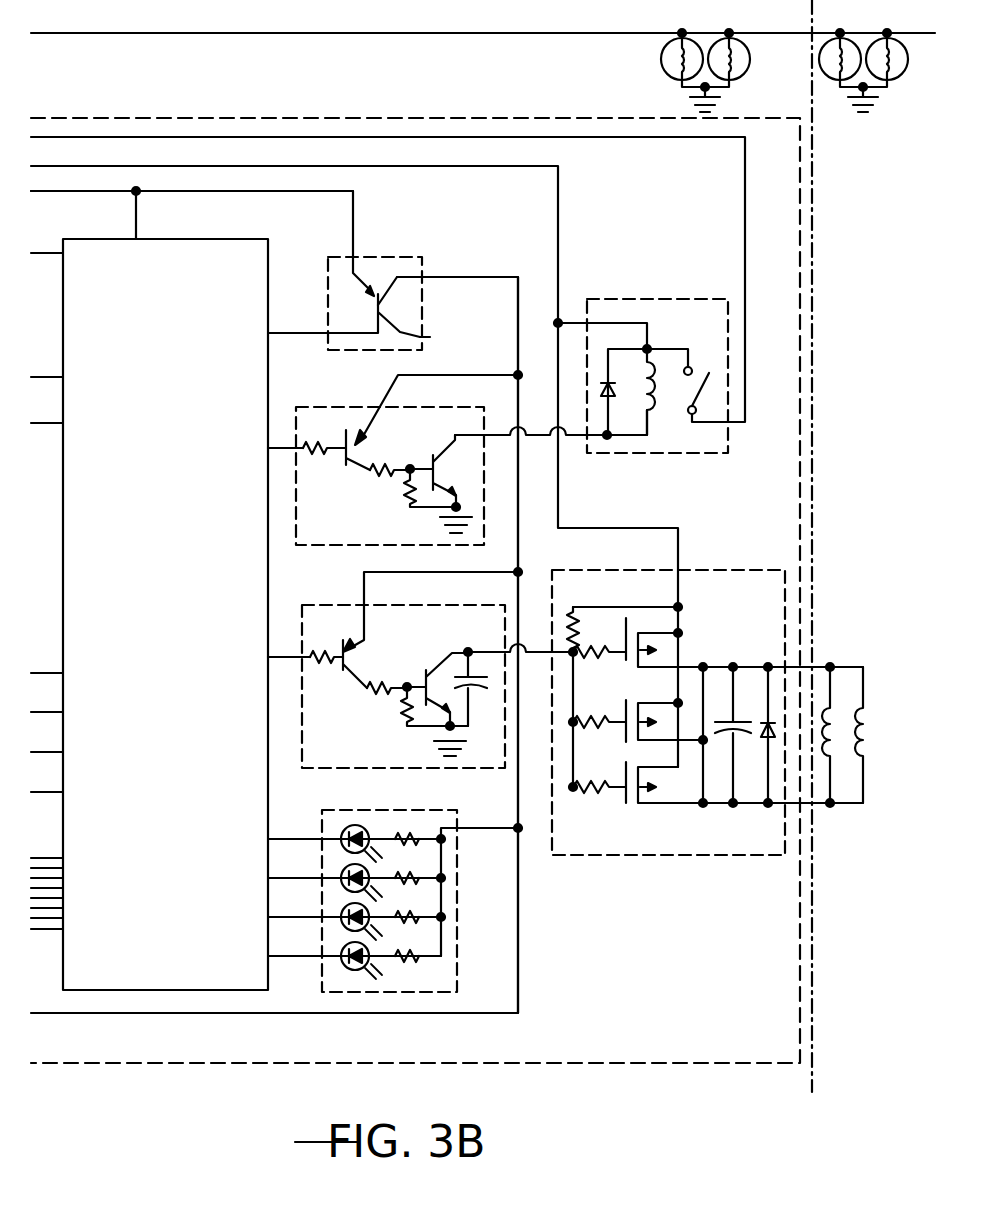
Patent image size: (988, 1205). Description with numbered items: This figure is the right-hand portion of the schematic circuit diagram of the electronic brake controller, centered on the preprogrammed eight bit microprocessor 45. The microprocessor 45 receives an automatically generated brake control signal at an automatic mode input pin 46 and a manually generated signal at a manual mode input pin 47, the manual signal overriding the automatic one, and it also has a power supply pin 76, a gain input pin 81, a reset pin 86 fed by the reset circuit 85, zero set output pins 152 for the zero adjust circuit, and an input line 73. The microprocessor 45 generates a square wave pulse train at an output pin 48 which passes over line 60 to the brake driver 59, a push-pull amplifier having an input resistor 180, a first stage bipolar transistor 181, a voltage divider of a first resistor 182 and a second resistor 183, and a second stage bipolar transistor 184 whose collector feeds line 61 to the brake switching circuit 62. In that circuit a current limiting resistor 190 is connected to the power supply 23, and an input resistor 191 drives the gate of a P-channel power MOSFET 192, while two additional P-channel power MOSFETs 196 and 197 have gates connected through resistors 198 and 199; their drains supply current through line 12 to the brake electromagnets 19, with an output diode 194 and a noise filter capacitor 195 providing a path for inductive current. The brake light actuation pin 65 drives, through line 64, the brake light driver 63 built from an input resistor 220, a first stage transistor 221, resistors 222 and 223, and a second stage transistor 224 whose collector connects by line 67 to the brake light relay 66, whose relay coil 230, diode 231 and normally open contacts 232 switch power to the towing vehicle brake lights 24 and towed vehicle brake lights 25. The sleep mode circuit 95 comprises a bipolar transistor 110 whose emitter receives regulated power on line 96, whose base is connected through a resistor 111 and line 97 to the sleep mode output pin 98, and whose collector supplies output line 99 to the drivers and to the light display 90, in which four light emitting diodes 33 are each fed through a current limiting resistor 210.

The line 12 is at (830, 665).
The brake electromagnets 19 is at (858, 765).
The vehicle power supply 23 is at (664, 70).
The towing vehicle brake lights 24 is at (751, 60).
The towed vehicle brake lights 25 is at (838, 82).
The light emitting diodes 33 is at (340, 847).
The microprocessor 45 is at (170, 338).
The automatic mode input pin 46 is at (60, 752).
The manual mode input pin 47 is at (60, 673).
The output pin 48 is at (268, 657).
The brake driver 59 is at (348, 770).
The line 60 is at (268, 662).
The line 61 is at (535, 640).
The brake switching circuit 62 is at (727, 570).
The brake light driver 63 is at (304, 545).
The line 64 is at (268, 448).
The brake light actuation pin 65 is at (268, 448).
The brake light relay 66 is at (592, 310).
The line 67 is at (502, 432).
The input line 73 is at (63, 253).
The power supply pin 76 is at (140, 238).
The gain input pin 81 is at (60, 377).
The reset circuit 85 is at (480, 690).
The reset pin 86 is at (60, 423).
The light display 90 is at (458, 948).
The sleep mode circuit 95 is at (372, 257).
The line 96 is at (305, 191).
The line 97 is at (296, 334).
The sleep mode output pin 98 is at (268, 333).
The output line 99 is at (460, 275).
The bipolar transistor 110 is at (420, 307).
The resistor 111 is at (420, 340).
The zero set output pins 152 is at (70, 857).
The input resistor 180 is at (322, 650).
The first stage bipolar transistor 181 is at (345, 668).
The first resistor 182 is at (388, 672).
The second resistor 183 is at (395, 722).
The second stage bipolar transistor 184 is at (432, 675).
The current limiting resistor 190 is at (568, 625).
The input resistor 191 is at (598, 652).
The P-channel power MOSFET 192 is at (648, 630).
The output diode 194 is at (770, 717).
The noise filter capacitor 195 is at (733, 742).
The P-channel power MOSFET 196 is at (660, 698).
The P-channel power MOSFET 197 is at (630, 752).
The resistor 198 is at (598, 722).
The resistor 199 is at (598, 808).
The current limiting resistor 210 is at (428, 846).
The input resistor 220 is at (318, 458).
The first stage transistor 221 is at (330, 462).
The first resistor 222 is at (384, 466).
The second resistor 223 is at (405, 500).
The second stage transistor 224 is at (440, 452).
The relay coil 230 is at (658, 412).
The diode 231 is at (617, 397).
The normally open contacts 232 is at (708, 378).